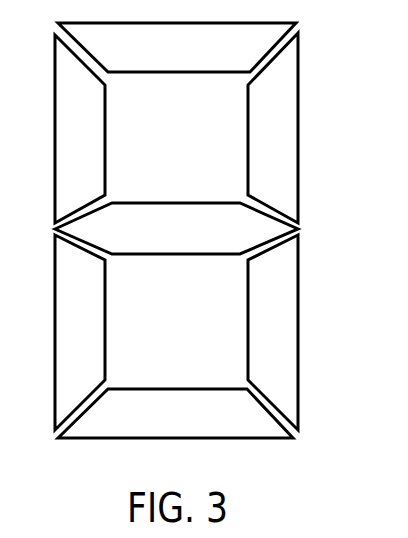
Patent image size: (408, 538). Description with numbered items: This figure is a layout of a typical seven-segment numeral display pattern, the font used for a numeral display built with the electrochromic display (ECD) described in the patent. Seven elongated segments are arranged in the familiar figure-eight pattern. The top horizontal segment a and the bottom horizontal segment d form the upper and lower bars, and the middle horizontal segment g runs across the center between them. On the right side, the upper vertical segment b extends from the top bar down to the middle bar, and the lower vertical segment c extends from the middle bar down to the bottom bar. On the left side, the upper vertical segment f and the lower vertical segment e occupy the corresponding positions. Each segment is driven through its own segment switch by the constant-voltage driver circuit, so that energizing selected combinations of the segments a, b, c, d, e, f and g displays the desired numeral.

The segment a is at (177, 47).
The segment b is at (273, 128).
The segment c is at (273, 332).
The segment d is at (175, 414).
The segment e is at (80, 332).
The segment f is at (80, 129).
The segment g is at (176, 224).